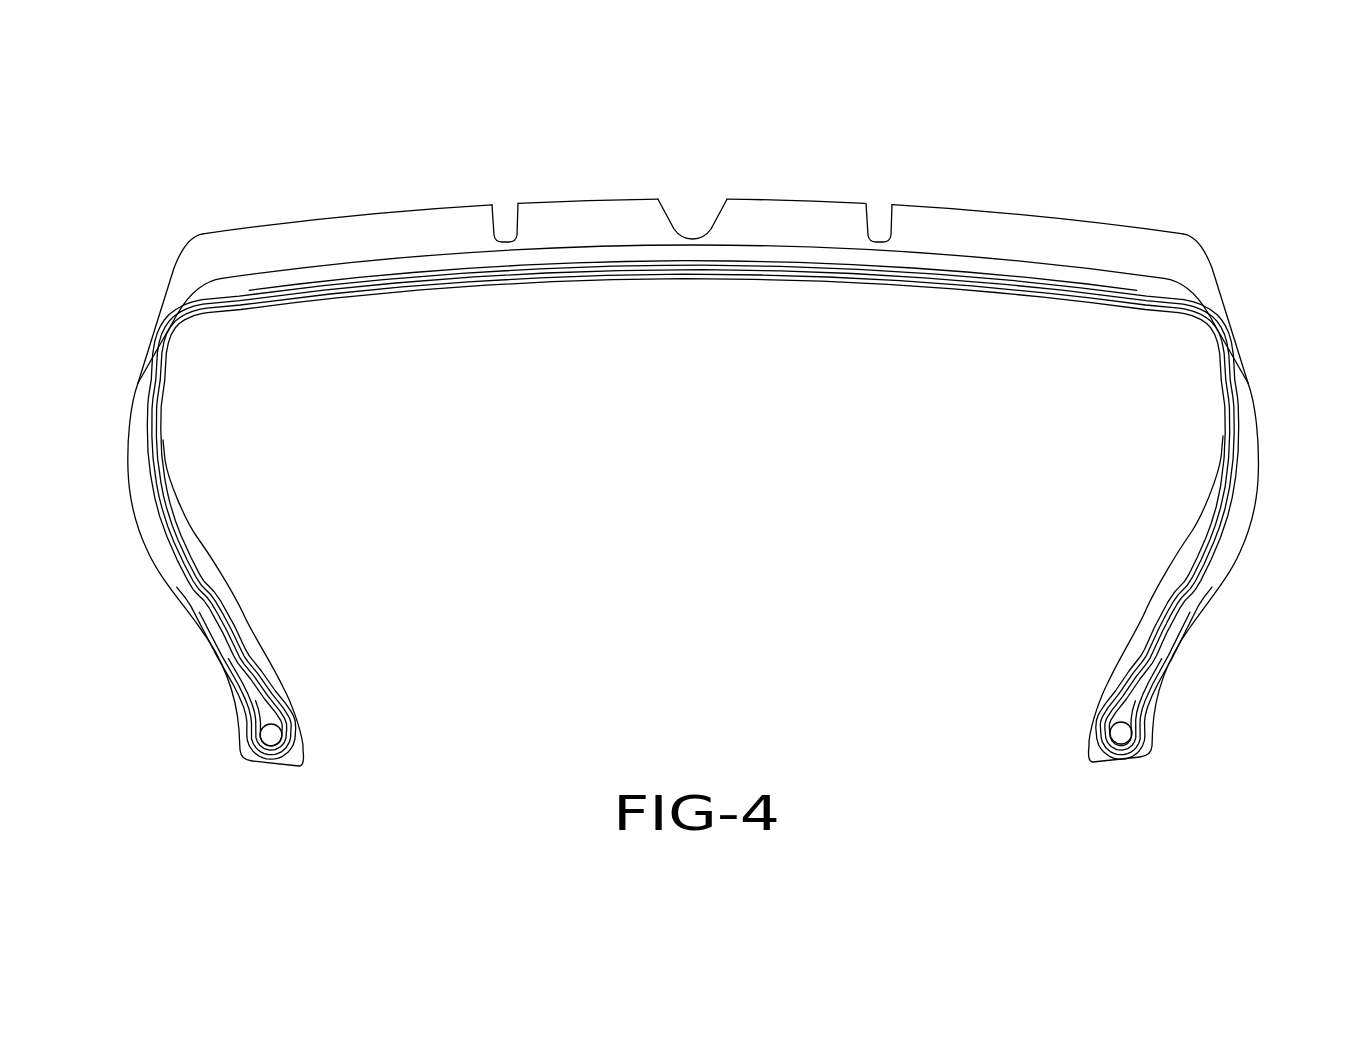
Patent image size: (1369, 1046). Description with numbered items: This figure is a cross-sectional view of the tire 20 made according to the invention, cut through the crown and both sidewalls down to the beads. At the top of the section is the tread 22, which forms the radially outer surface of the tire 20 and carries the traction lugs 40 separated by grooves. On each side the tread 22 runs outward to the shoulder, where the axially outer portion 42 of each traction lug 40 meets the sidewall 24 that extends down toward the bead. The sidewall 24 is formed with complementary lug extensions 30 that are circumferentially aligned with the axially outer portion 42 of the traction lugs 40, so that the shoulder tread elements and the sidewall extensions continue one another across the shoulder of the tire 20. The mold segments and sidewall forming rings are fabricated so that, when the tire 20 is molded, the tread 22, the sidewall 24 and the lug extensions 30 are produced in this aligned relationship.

The tire 20 is at (693, 439).
The tread 22 is at (578, 196).
The sidewall 24 is at (147, 548).
The lug extensions 30 is at (138, 383).
The traction lugs 40 is at (358, 228).
The axially outer portion 42 is at (165, 295).